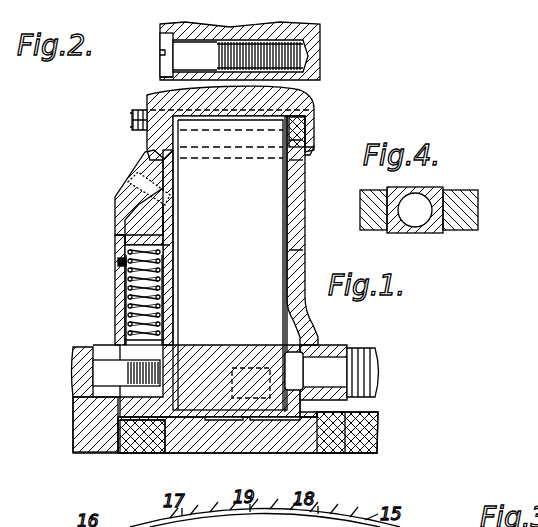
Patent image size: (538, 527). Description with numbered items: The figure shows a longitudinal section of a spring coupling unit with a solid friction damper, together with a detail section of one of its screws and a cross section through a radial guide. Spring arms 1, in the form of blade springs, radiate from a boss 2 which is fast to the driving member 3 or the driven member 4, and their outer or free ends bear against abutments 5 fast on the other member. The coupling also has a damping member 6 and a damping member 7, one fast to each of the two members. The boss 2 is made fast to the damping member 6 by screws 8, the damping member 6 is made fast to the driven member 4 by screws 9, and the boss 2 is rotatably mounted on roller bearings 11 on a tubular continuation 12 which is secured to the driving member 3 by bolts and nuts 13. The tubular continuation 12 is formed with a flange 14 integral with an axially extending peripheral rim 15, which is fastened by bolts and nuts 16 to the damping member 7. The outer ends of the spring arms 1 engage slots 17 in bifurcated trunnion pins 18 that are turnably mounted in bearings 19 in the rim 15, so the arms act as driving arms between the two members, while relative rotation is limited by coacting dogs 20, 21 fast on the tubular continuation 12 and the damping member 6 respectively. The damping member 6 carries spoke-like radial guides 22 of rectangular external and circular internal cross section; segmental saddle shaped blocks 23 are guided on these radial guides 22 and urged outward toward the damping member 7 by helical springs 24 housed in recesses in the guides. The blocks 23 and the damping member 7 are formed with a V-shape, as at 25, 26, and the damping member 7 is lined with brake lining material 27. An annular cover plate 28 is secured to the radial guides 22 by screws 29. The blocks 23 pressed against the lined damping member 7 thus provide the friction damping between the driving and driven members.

In FIG. 1, the spring arms 1 is at (292, 277).
In FIG. 2, the boss 2 is at (305, 80).
In FIG. 1, the boss 2 is at (222, 365).
In FIG. 1, the driving member 3 is at (345, 430).
In FIG. 1, the driven member 4 is at (90, 452).
In FIG. 1, the abutments 5 is at (303, 178).
In FIG. 2, the damping member 6 is at (165, 80).
In FIG. 1, the damping member 6 is at (100, 378).
In FIG. 1, the damping member 7 is at (136, 184).
In FIG. 2, the screws 8 is at (190, 54).
In FIG. 1, the screws 8 is at (252, 372).
In FIG. 1, the screws 9 is at (80, 430).
In FIG. 1, the roller bearings 11 is at (246, 418).
In FIG. 1, the tubular continuation 12 is at (288, 430).
In FIG. 1, the bolts and nuts 13 is at (350, 352).
In FIG. 1, the flange 14 is at (300, 245).
In FIG. 1, the peripheral rim 15 is at (316, 105).
In FIG. 1, the bolts and nuts 16 is at (135, 118).
In FIG. 1, the slots 17 is at (166, 150).
In FIG. 1, the trunnion pins 18 is at (306, 134).
In FIG. 1, the bearings 19 is at (310, 151).
In FIG. 1, the dog 20 is at (170, 440).
In FIG. 1, the dog 21 is at (122, 430).
In FIG. 1, the radial guides 22 is at (125, 335).
In FIG. 4, the radial guides 22 is at (436, 233).
In FIG. 1, the saddle shaped blocks 23 is at (168, 233).
In FIG. 4, the saddle shaped blocks 23 is at (378, 230).
In FIG. 1, the helical springs 24 is at (160, 312).
In FIG. 1, the V-shape 25 is at (127, 238).
In FIG. 1, the V-shape 26 is at (165, 198).
In FIG. 1, the brake lining material 27 is at (160, 218).
In FIG. 1, the annular cover plate 28 is at (116, 306).
In FIG. 1, the screws 29 is at (120, 262).